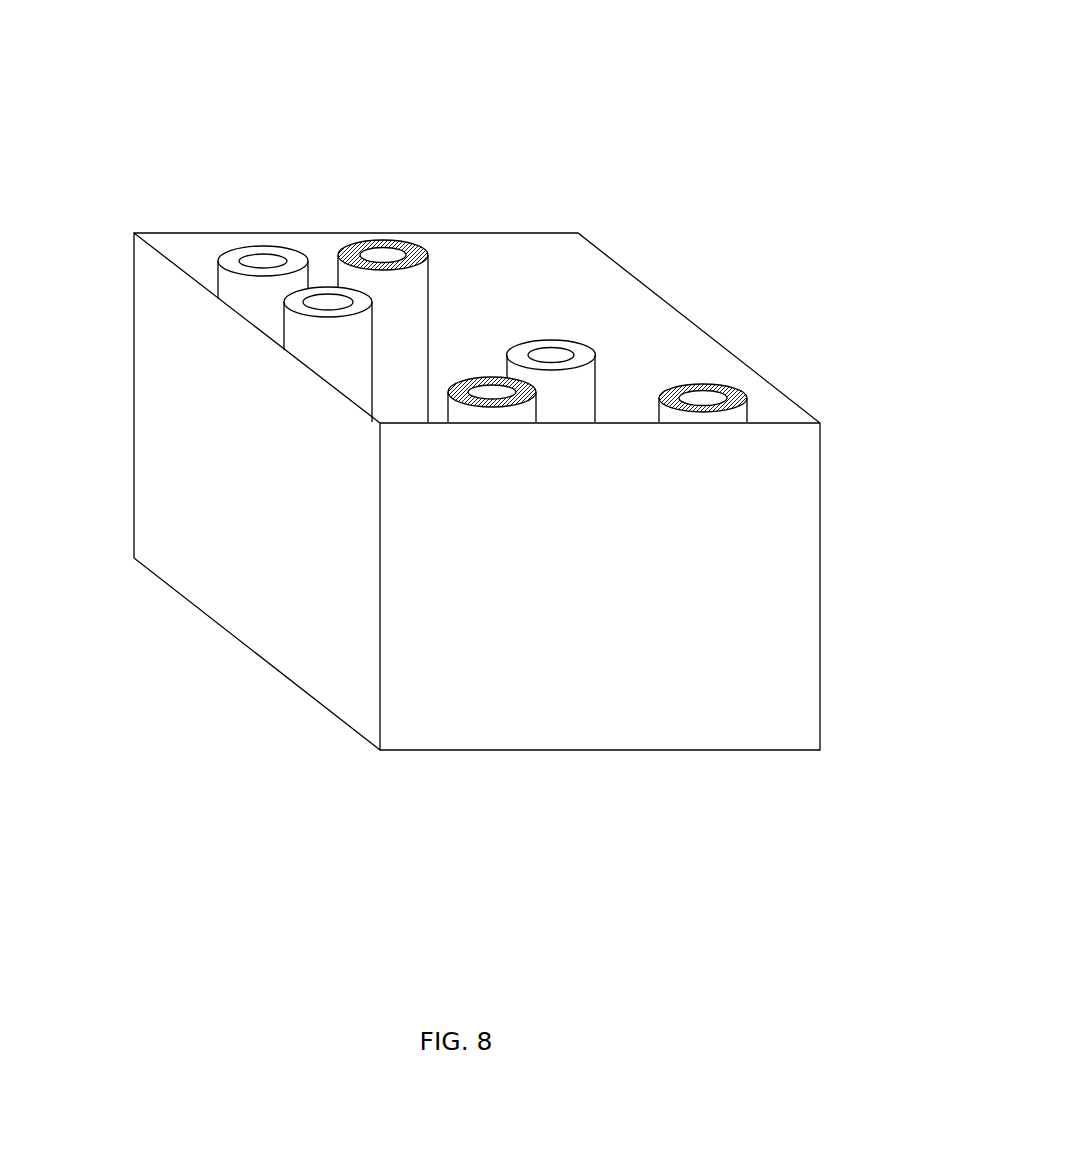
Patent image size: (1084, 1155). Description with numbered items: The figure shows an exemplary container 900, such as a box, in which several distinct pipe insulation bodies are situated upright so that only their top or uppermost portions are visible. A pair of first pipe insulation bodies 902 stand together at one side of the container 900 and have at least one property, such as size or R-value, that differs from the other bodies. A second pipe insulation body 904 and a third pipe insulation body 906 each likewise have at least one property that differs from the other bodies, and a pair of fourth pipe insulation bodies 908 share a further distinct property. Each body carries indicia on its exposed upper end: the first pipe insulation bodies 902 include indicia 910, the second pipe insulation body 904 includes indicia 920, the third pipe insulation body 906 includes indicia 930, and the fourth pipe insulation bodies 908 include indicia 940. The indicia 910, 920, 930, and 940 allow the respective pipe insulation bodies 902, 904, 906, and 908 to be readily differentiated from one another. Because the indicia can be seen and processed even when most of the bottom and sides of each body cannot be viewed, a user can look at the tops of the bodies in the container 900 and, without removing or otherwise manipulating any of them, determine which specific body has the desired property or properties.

The container 900 is at (185, 424).
The first pipe insulation bodies 902 is at (295, 412).
The second pipe insulation body 904 is at (448, 219).
The third pipe insulation body 906 is at (666, 268).
The fourth pipe insulation bodies 908 is at (701, 485).
The indicia 910 is at (327, 290).
The indicia 920 is at (388, 245).
The indicia 930 is at (557, 342).
The indicia 940 is at (615, 565).